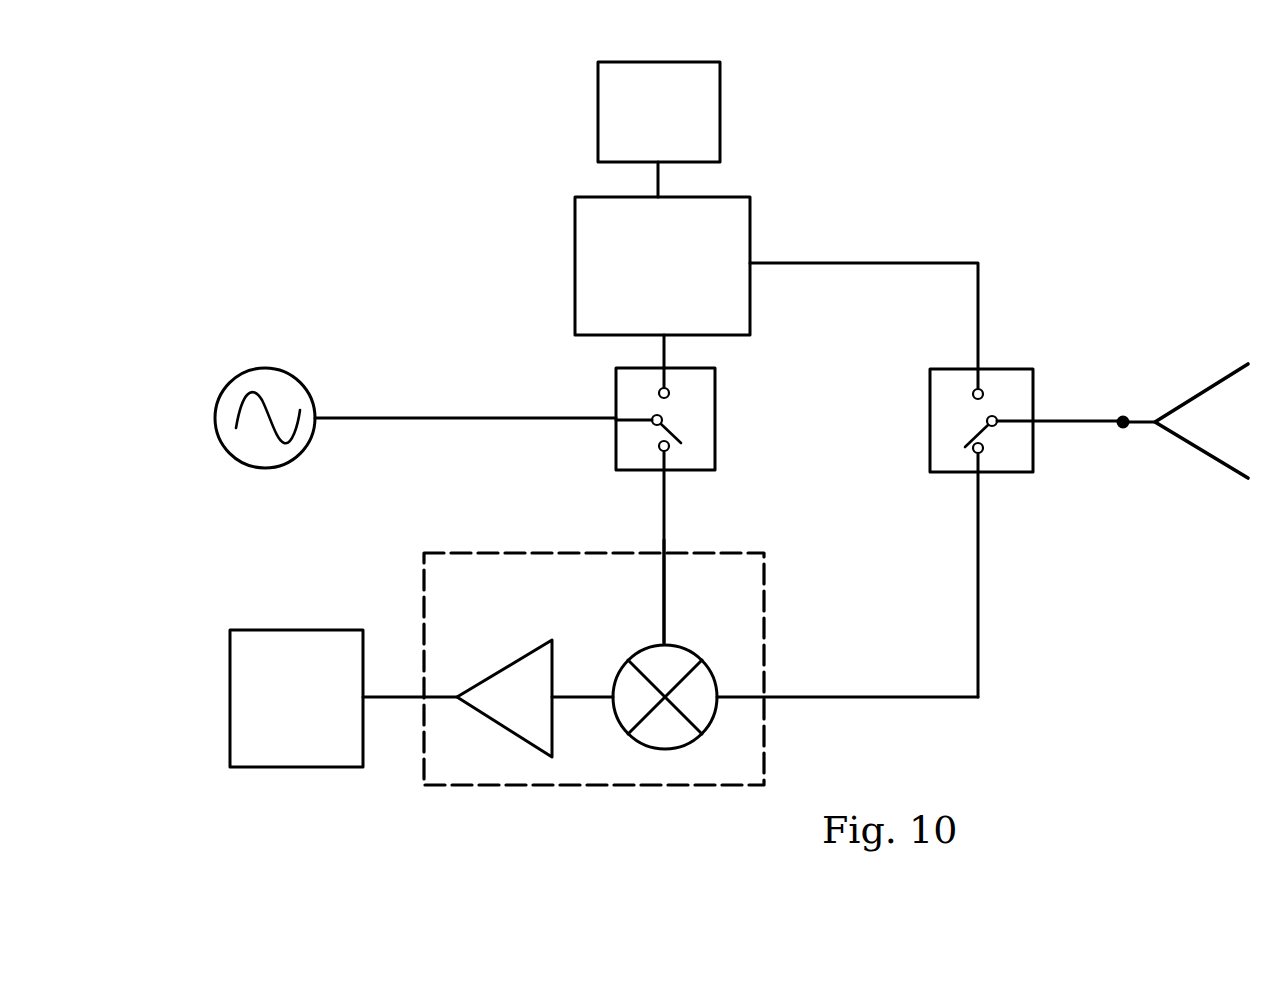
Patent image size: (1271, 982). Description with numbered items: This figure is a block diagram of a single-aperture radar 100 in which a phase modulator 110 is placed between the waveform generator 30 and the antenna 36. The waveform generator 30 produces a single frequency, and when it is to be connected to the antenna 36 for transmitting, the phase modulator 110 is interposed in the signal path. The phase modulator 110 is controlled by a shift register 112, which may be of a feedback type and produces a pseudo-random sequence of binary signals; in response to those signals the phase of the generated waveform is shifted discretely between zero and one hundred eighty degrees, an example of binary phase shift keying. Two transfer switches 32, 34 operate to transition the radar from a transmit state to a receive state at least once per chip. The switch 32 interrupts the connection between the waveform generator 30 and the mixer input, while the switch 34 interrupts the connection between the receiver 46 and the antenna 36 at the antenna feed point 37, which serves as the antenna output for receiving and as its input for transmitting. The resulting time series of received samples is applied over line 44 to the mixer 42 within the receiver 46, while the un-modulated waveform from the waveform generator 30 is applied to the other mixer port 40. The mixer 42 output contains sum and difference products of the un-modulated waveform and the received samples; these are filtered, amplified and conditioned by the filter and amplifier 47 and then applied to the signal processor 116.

The radar transceiver system 100 is at (268, 264).
The waveform generator 30 is at (245, 368).
The phase modulator 110 is at (593, 197).
The shift register 112 is at (720, 103).
The switch 32 is at (715, 415).
The switch 34 is at (930, 415).
The antenna 36 is at (1207, 385).
The antenna feed point 37 is at (1123, 412).
The mixer port 40 is at (664, 601).
The mixer 42 is at (646, 652).
The mixer received-signal input line 44 is at (725, 700).
The receiver 46 is at (765, 612).
The filter and amplifier 47 is at (537, 649).
The signal processor 116 is at (268, 630).